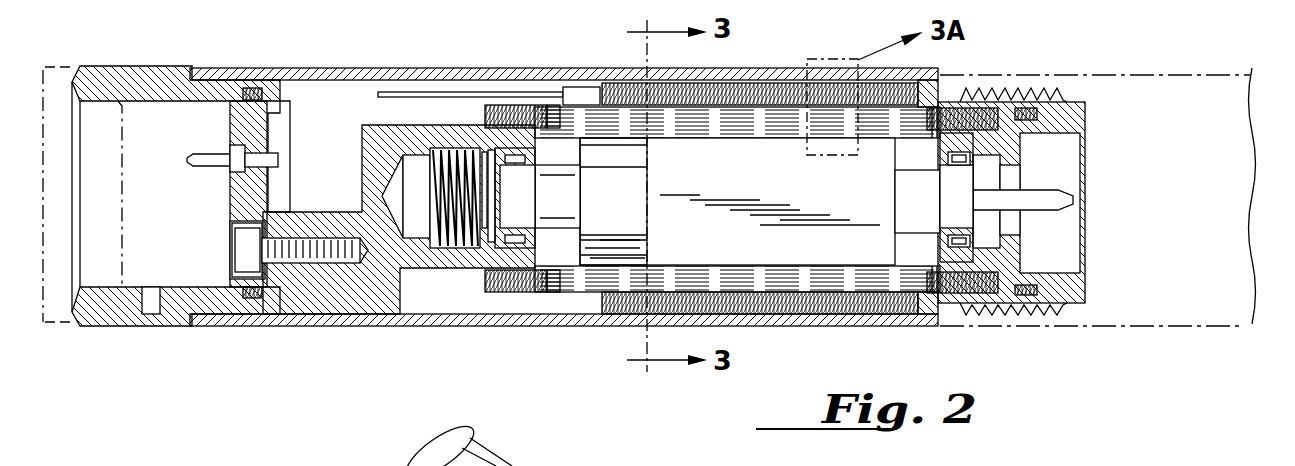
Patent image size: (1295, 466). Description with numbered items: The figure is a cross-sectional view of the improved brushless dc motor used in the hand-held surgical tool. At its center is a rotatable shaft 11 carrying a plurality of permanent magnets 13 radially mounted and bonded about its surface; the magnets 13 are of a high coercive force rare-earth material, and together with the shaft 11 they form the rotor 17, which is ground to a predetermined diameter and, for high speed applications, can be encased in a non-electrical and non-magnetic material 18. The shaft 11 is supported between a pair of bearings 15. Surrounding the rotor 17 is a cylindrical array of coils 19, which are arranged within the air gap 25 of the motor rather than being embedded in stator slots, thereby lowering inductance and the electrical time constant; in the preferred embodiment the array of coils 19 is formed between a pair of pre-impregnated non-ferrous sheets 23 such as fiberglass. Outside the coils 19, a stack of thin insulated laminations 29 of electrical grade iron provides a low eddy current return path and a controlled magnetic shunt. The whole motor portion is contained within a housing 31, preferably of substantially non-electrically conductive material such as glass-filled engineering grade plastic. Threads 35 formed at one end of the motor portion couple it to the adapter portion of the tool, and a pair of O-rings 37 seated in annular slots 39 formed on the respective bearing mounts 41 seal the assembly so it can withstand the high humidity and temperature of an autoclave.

The rotatable shaft 11 is at (563, 220).
The permanent magnets 13 is at (610, 247).
The bearings 15 is at (515, 242).
The rotor 17 is at (562, 136).
The non-electrical and non-magnetic material 18 is at (598, 136).
The coils 19 is at (497, 108).
The pre-impregnated sheets 23 is at (988, 112).
The air gap 25 is at (745, 137).
The insulated laminations 29 is at (827, 309).
The housing 31 is at (440, 322).
The threads 35 is at (1022, 315).
The O-rings 37 is at (252, 300).
The annular slots 39 is at (256, 88).
The bearing mounts 41 is at (367, 285).